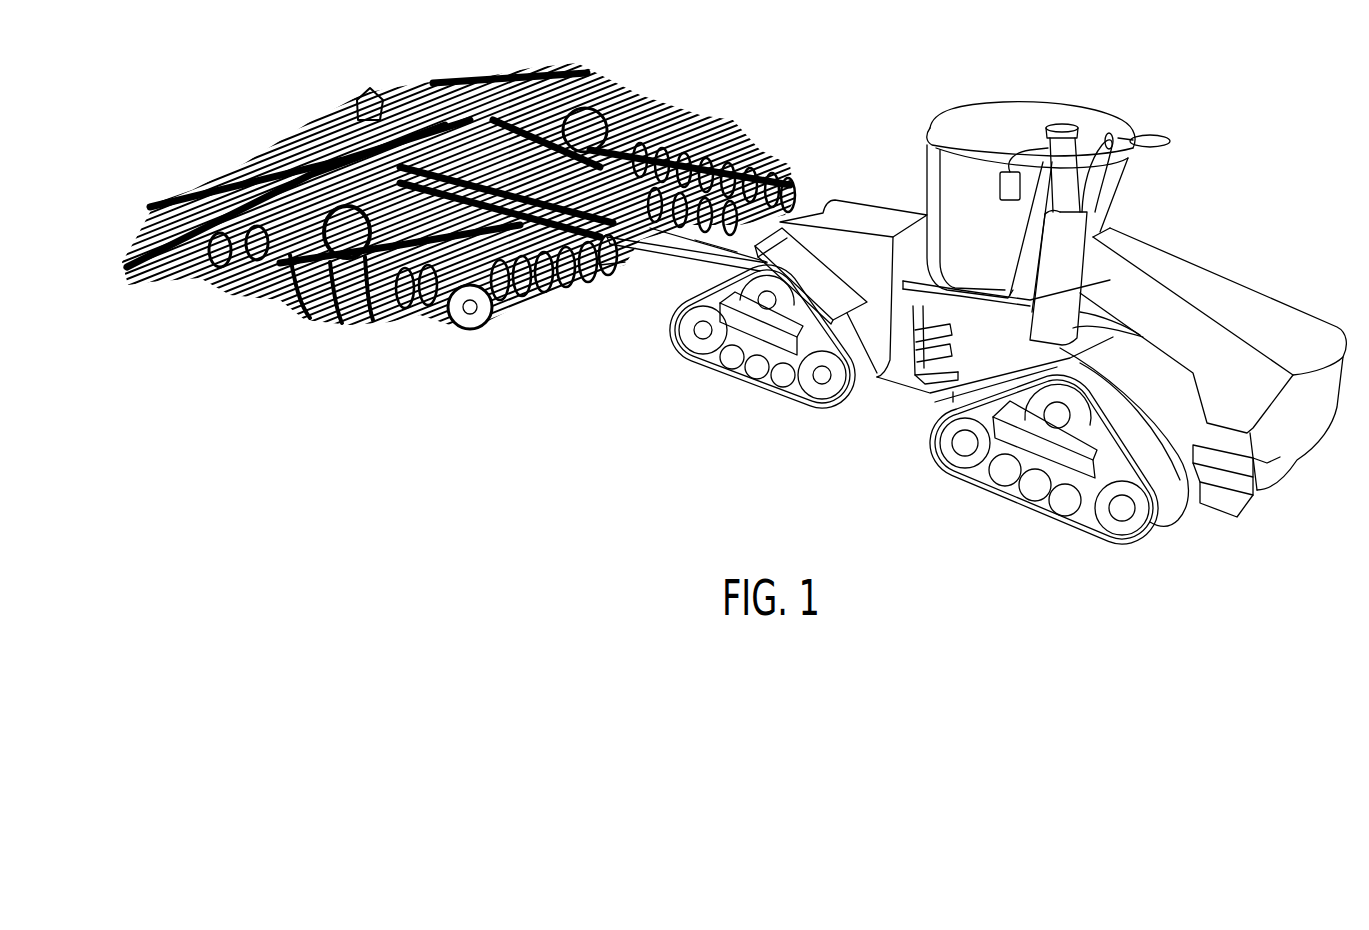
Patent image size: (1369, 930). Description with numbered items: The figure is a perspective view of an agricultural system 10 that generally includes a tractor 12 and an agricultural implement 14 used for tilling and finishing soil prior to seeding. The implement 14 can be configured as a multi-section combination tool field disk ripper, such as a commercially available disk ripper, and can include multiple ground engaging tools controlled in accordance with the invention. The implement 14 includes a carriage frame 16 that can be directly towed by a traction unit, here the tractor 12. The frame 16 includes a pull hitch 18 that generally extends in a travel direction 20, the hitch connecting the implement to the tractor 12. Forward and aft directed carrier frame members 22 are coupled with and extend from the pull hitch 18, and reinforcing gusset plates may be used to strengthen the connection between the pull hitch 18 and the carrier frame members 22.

The agricultural system 10 is at (1062, 58).
The tractor 12 is at (1196, 231).
The agricultural implement 14 is at (670, 72).
The carriage frame 16 is at (608, 293).
The pull hitch 18 is at (667, 257).
The travel direction 20 is at (794, 452).
The carrier frame members 22 is at (353, 140).